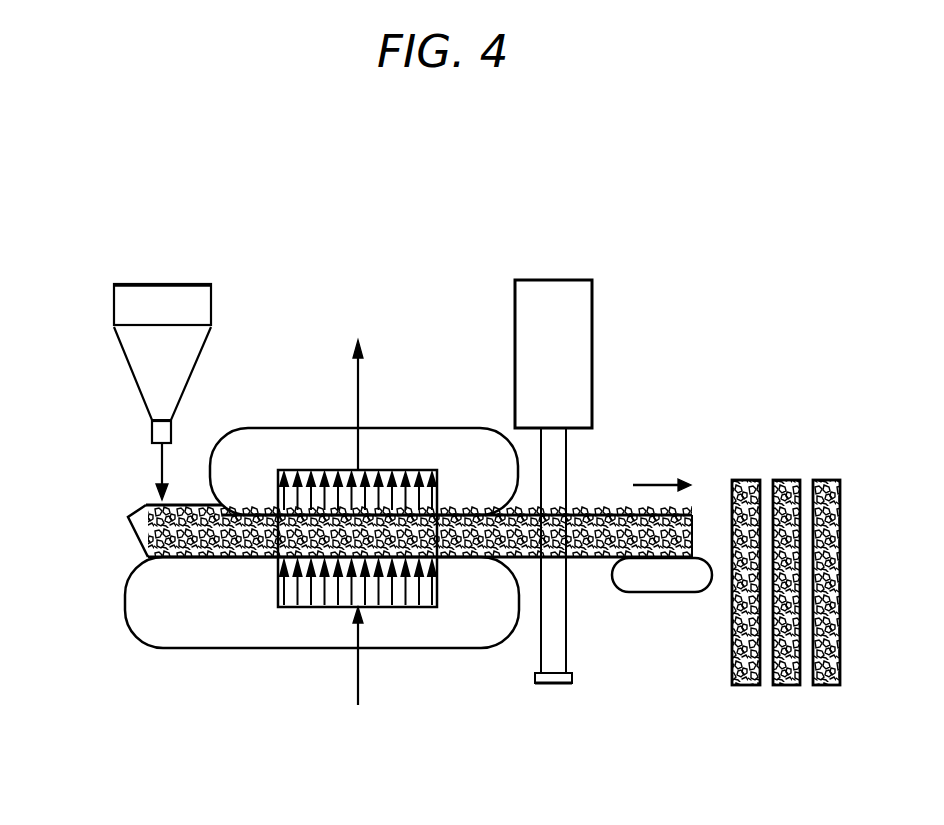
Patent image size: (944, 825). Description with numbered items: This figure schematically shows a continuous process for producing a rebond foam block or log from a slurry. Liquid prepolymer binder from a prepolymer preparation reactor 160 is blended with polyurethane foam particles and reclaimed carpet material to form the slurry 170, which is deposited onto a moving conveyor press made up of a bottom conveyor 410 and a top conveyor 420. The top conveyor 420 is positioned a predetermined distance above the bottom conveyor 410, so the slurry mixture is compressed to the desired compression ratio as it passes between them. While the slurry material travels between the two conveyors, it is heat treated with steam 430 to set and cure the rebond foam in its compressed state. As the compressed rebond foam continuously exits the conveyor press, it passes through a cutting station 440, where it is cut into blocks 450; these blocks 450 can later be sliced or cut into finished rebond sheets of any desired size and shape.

The prepolymer preparation reactor 160 is at (212, 300).
The slurry 170 is at (146, 505).
The bottom conveyor 410 is at (152, 650).
The top conveyor 420 is at (410, 425).
The steam 430 is at (357, 533).
The cutting station 440 is at (593, 335).
The blocks 450 is at (598, 513).